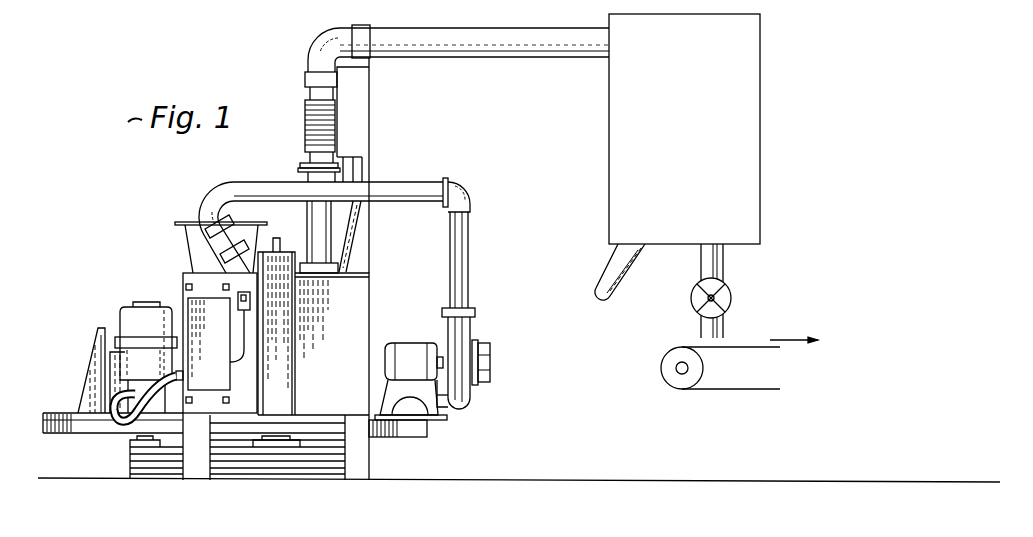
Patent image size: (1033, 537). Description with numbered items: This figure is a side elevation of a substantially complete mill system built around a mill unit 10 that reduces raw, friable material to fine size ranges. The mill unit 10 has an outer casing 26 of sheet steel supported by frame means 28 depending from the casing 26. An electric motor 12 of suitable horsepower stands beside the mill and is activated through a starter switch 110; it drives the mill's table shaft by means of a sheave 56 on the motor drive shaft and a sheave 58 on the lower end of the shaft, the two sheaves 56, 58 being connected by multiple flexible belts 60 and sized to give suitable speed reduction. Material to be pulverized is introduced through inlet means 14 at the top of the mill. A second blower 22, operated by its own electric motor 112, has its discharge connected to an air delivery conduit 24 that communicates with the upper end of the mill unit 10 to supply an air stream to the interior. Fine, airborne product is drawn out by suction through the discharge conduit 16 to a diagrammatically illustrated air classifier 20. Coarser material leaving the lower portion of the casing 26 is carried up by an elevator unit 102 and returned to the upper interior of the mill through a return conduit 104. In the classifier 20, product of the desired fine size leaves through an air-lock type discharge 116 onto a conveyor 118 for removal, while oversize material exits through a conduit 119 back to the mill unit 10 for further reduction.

The mill unit 10 is at (377, 312).
The electric motor 12 is at (127, 313).
The inlet means 14 is at (190, 233).
The discharge conduit 16 is at (487, 37).
The air classifier 20 is at (615, 107).
The blower 22 is at (472, 400).
The air delivery conduit 24 is at (255, 185).
The outer casing 26 is at (340, 367).
The frame means 28 is at (370, 467).
The sheave 56 is at (133, 440).
The sheave 58 is at (293, 445).
The flexible belts 60 is at (240, 460).
The elevator unit 102 is at (368, 116).
The return conduit 104 is at (352, 240).
The starter switch 110 is at (240, 307).
The electric motor 112 is at (413, 352).
The air-lock type discharge 116 is at (731, 294).
The conveyor 118 is at (747, 347).
The conduit 119 is at (622, 282).